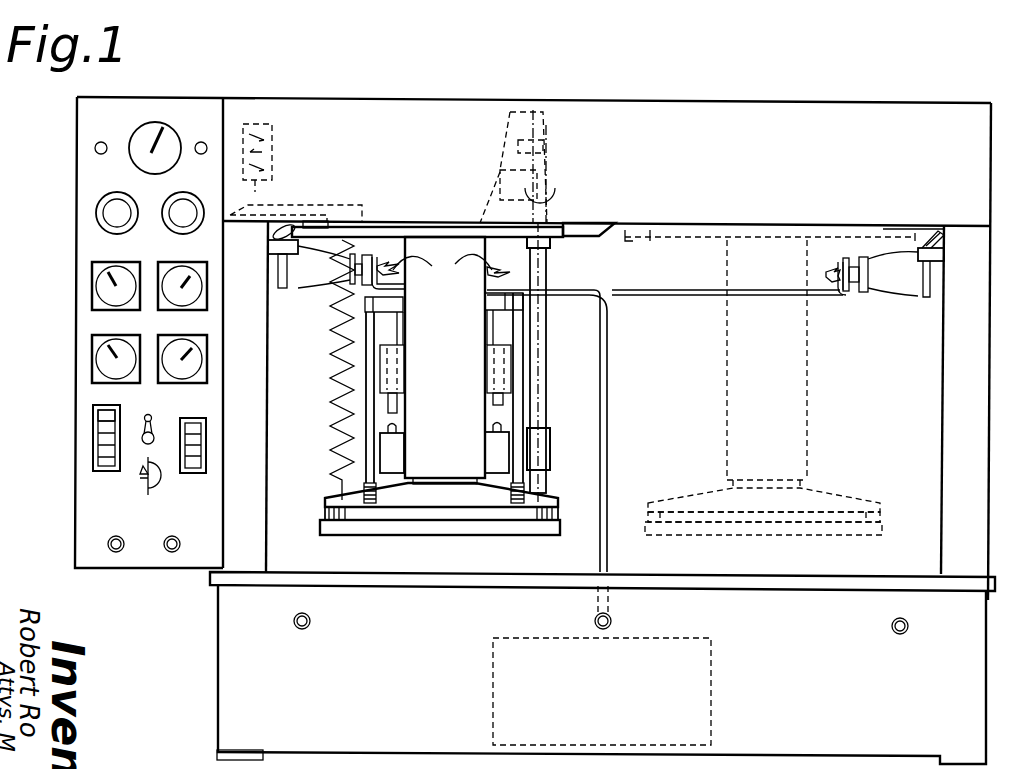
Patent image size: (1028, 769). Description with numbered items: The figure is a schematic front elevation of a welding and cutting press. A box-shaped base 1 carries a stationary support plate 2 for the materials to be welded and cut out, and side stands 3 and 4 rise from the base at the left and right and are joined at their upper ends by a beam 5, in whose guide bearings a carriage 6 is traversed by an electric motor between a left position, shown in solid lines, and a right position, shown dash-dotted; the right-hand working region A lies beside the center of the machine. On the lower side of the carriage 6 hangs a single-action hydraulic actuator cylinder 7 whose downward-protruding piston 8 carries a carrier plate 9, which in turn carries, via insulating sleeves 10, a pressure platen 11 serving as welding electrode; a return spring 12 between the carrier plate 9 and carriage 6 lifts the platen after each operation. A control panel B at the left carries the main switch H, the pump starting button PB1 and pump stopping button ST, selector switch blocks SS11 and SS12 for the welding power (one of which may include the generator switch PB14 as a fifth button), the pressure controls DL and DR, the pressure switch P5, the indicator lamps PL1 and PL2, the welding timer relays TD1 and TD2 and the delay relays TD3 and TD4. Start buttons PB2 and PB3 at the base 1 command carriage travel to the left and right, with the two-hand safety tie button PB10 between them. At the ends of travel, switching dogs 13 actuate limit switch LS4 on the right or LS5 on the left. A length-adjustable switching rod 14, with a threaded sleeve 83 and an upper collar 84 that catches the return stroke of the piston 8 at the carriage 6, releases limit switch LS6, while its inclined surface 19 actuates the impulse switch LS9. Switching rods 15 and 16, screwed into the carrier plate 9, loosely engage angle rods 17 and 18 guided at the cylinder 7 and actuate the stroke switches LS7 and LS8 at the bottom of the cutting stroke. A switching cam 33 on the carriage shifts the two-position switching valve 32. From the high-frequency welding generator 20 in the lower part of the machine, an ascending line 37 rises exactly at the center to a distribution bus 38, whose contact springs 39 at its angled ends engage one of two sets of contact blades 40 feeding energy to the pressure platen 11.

The control panel B is at (82, 112).
The indicator lamp PL1 is at (96, 147).
The pressure switch P5 is at (170, 137).
The indicator lamp PL2 is at (206, 143).
The left pressure control DL is at (112, 206).
The right pressure control DR is at (190, 206).
The welding timer relay TD1 is at (100, 288).
The welding timer relay TD2 is at (196, 290).
The delay relay TD3 is at (99, 360).
The delay relay TD4 is at (198, 358).
The manually operated switch PB14 is at (98, 414).
The selector switch SS11 is at (100, 447).
The selector switch SS12 is at (197, 448).
The main switch H is at (140, 483).
The pump starting button PB1 is at (112, 553).
The pump stopping button ST is at (172, 553).
The side stand 3 is at (266, 557).
The beam 5 is at (985, 172).
The work chamber A is at (982, 414).
The stationary support plate 2 is at (889, 574).
The box-shaped base 1 is at (980, 650).
The start button PB3 is at (302, 630).
The two-hand safety tie button PB10 is at (603, 630).
The high-frequency welding generator 20 is at (712, 688).
The start button PB2 is at (905, 634).
The carriage 6 is at (443, 224).
The switching dogs 13 is at (305, 228).
The hydraulic actuator cylinder 7 is at (472, 240).
The collar 84 is at (552, 244).
The switching rod 14 is at (547, 279).
The threaded sleeve 83 is at (550, 448).
The angle rod 18 is at (524, 298).
The switching rod 16 is at (518, 403).
The angle rod 17 is at (366, 303).
The switching rod 15 is at (366, 377).
The return spring 12 is at (338, 428).
The stroke switch LS7 is at (398, 446).
The stroke switch LS8 is at (488, 452).
The contact blades 40 is at (451, 270).
The contact springs 39 is at (390, 262).
The limit switch LS5 is at (268, 247).
The limit switch LS4 is at (937, 254).
The distribution bus 38 is at (664, 296).
The ascending line 37 is at (608, 410).
The piston 8 is at (418, 487).
The carrier plate 9 is at (432, 502).
The insulating sleeves 10 is at (547, 522).
The pressure platen 11 is at (466, 530).
The two-position switching valve 32 is at (272, 140).
The switching cam 33 is at (283, 200).
The impulse switch LS9 is at (483, 168).
The limit switch LS6 is at (548, 124).
The inclined surface 19 is at (553, 192).
The side stand 4 is at (535, 166).